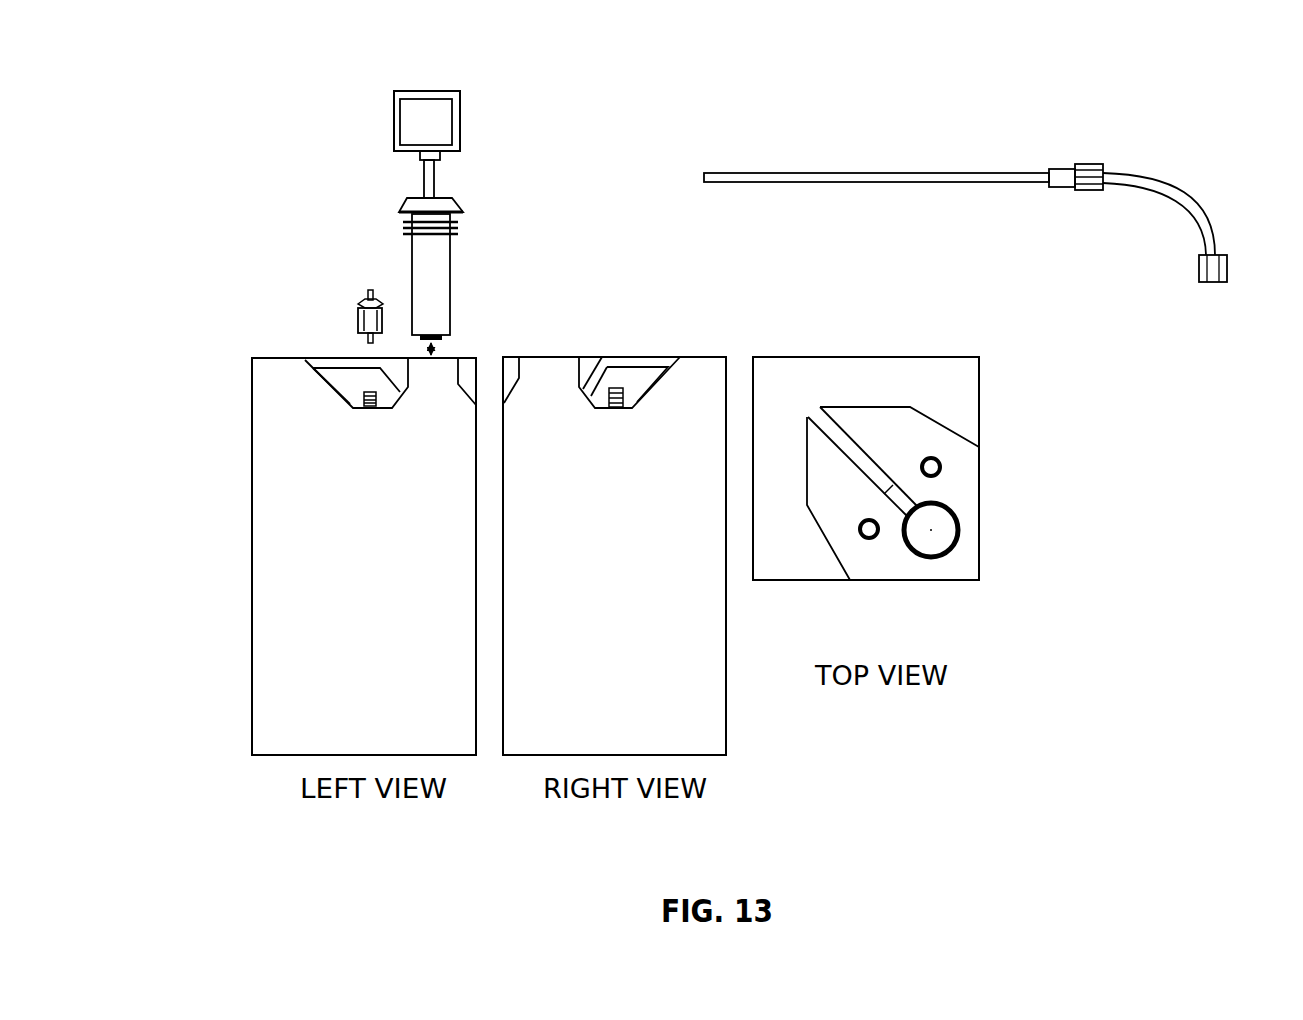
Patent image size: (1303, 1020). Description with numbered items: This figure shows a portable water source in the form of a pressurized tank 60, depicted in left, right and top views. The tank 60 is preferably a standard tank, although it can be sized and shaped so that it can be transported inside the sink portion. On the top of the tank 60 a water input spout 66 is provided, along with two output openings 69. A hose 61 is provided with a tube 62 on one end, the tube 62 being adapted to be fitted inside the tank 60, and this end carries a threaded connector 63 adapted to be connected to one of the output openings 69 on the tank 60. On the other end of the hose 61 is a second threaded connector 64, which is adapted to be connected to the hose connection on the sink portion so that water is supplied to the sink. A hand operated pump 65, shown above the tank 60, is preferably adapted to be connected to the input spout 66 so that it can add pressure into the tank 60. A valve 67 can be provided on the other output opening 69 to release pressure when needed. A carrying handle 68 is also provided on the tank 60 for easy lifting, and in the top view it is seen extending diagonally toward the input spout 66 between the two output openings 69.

The pressurized tank 60 is at (250, 515).
The hose 61 is at (1143, 171).
The tube 62 is at (617, 382).
The threaded connector 63 is at (1086, 161).
The second threaded connector 64 is at (1211, 286).
The hand operated pump 65 is at (430, 86).
The water input spout 66 is at (550, 354).
The valve 67 is at (352, 389).
The carrying handle 68 is at (366, 374).
The output openings 69 is at (369, 411).